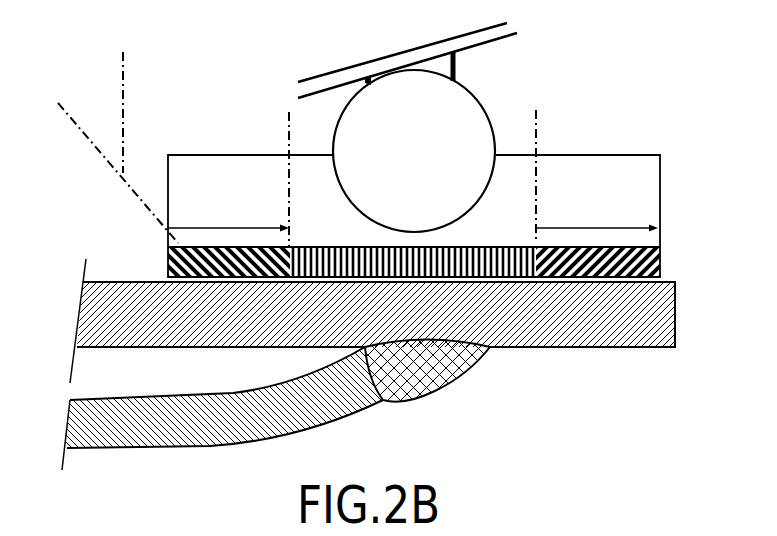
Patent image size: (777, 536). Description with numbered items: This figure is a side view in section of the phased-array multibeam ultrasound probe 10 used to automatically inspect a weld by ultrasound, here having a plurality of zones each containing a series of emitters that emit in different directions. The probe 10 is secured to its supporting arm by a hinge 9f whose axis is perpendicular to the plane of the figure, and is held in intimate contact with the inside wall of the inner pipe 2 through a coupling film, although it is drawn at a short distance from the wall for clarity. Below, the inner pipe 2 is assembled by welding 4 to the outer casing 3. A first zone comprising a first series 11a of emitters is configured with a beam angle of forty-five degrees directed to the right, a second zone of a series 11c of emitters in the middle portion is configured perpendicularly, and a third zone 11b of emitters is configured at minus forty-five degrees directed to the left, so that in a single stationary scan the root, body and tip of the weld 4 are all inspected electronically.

The ultrasound probe 10 is at (578, 150).
The hinge 9f is at (431, 147).
The first series of emitters 11a is at (168, 250).
The second edge zone 11b is at (660, 252).
The second series of emitters 11c is at (445, 247).
The inner pipe 2 is at (600, 348).
The outer casing 3 is at (143, 440).
The welding 4 is at (440, 382).